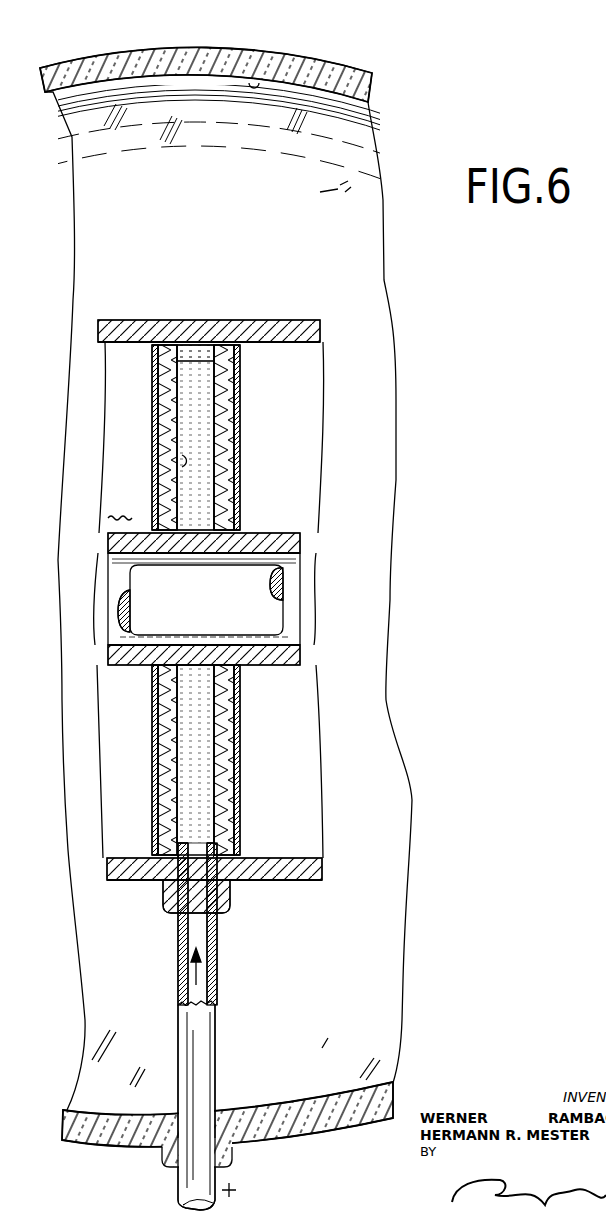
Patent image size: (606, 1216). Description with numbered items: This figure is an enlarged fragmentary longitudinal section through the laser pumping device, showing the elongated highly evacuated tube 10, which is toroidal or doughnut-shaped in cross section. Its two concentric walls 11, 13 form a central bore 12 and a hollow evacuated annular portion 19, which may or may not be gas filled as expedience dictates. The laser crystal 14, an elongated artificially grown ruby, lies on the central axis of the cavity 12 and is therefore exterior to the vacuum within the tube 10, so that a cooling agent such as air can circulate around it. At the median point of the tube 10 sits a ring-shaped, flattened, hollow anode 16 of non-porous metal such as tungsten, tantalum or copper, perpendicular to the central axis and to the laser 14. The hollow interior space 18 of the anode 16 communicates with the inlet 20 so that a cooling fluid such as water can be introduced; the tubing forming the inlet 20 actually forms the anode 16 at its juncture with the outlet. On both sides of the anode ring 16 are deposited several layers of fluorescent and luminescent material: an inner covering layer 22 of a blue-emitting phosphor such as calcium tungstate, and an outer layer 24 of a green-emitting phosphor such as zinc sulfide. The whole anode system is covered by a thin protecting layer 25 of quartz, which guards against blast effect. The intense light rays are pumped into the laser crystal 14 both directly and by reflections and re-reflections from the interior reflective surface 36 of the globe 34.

The tube 10 is at (274, 318).
The concentric wall 11 is at (300, 531).
The bore 12 is at (192, 592).
The concentric wall 13 is at (178, 332).
The laser crystal 14 is at (267, 593).
The anode 16 is at (182, 460).
The hollow interior space 18 is at (205, 466).
The hollow evacuated annular portion 19 is at (122, 508).
The inlet 20 is at (172, 401).
The inner covering layer of fluorescent and luminescent material 22 is at (172, 430).
The outer layer 24 is at (228, 402).
The protecting layer 25 is at (196, 718).
The globe 34 is at (335, 82).
The interior reflective surface 36 is at (254, 82).